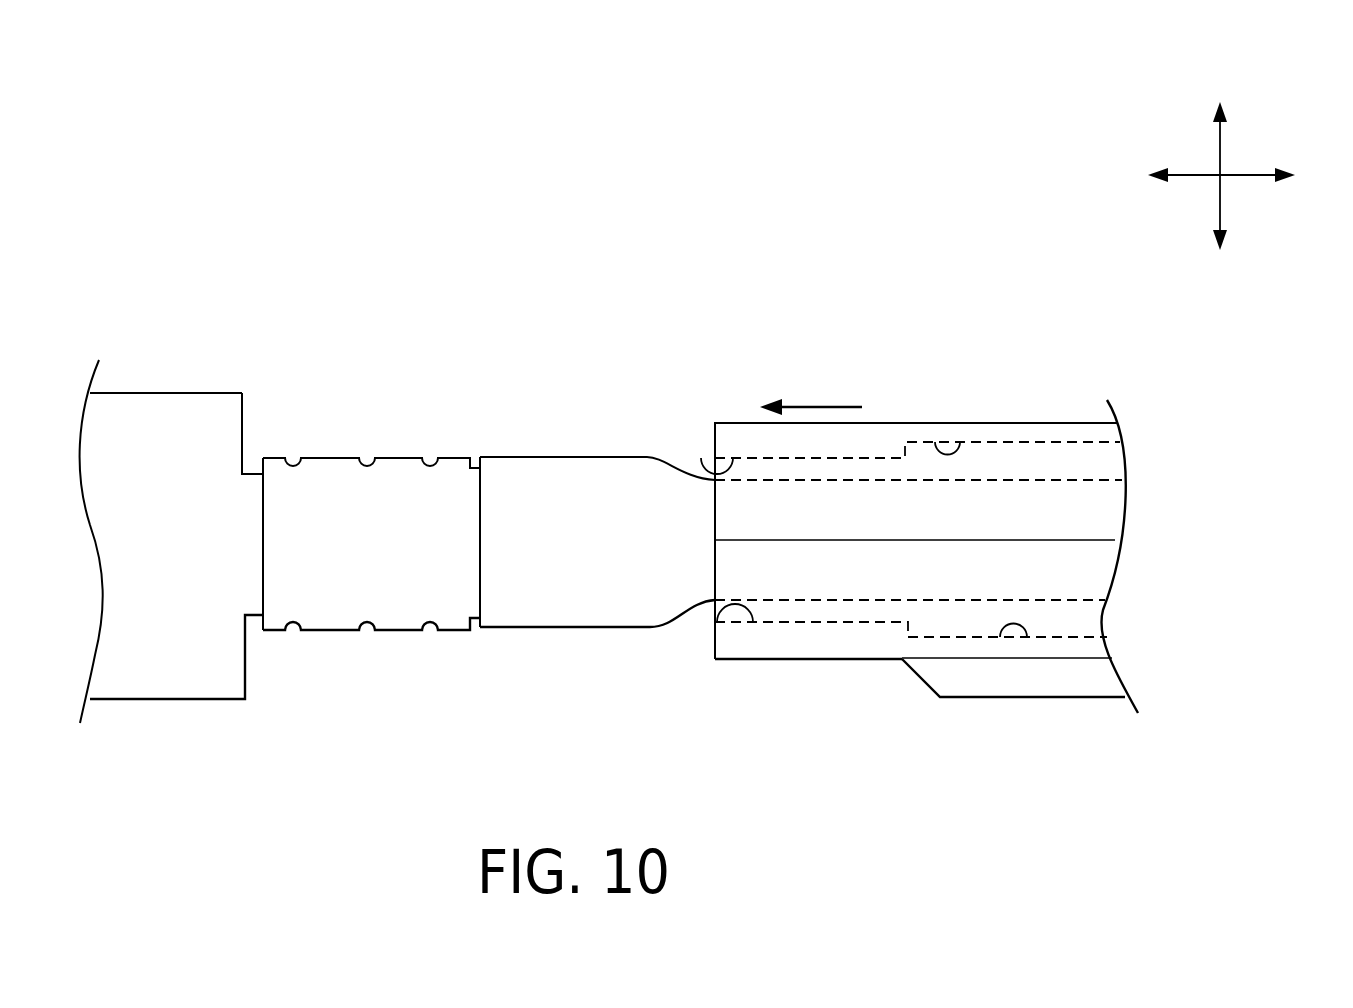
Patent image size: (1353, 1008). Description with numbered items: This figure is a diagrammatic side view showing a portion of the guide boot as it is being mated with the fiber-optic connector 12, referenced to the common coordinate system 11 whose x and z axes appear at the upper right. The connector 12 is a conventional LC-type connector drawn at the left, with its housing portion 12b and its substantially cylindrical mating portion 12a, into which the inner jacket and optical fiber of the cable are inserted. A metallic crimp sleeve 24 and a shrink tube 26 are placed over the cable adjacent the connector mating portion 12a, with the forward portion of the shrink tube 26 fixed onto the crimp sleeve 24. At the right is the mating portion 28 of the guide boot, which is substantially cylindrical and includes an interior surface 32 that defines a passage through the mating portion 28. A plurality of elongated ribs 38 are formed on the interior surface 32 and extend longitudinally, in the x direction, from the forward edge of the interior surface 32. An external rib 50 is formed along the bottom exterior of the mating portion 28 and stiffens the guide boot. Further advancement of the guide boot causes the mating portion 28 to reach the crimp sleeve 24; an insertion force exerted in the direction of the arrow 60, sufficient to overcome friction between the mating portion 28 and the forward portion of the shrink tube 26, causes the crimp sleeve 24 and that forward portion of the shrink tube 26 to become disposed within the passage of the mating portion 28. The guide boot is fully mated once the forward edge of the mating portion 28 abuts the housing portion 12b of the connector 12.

The coordinate system 11 is at (1247, 143).
The fiber-optic connector 12 is at (134, 733).
The mating portion 12a is at (253, 470).
The housing portion 12b is at (136, 409).
The crimp sleeve 24 is at (393, 457).
The shrink tube 26 is at (508, 457).
The mating portion 28 is at (756, 680).
The interior surface 32 is at (960, 440).
The ribs 38 is at (713, 466).
The external rib 50 is at (977, 678).
The arrow 60 is at (803, 403).